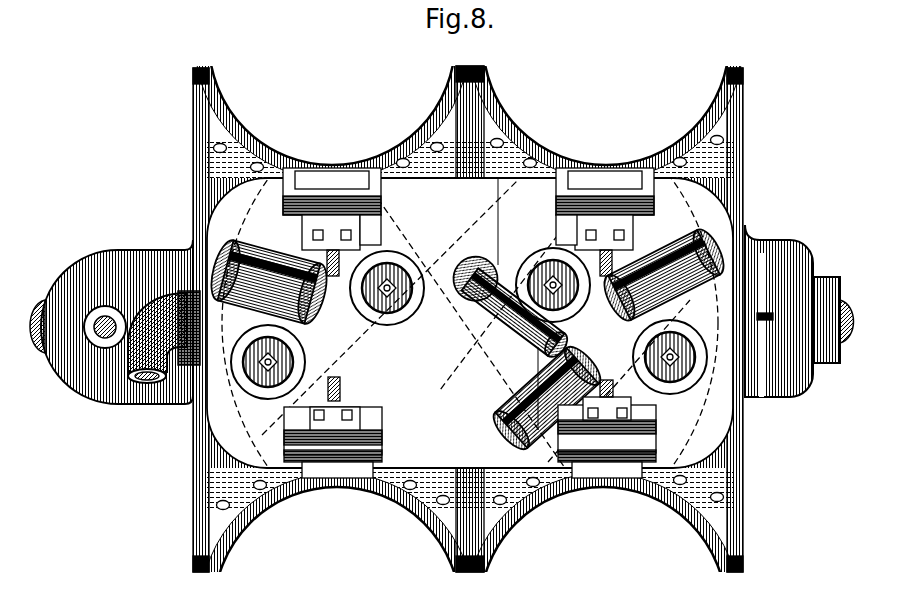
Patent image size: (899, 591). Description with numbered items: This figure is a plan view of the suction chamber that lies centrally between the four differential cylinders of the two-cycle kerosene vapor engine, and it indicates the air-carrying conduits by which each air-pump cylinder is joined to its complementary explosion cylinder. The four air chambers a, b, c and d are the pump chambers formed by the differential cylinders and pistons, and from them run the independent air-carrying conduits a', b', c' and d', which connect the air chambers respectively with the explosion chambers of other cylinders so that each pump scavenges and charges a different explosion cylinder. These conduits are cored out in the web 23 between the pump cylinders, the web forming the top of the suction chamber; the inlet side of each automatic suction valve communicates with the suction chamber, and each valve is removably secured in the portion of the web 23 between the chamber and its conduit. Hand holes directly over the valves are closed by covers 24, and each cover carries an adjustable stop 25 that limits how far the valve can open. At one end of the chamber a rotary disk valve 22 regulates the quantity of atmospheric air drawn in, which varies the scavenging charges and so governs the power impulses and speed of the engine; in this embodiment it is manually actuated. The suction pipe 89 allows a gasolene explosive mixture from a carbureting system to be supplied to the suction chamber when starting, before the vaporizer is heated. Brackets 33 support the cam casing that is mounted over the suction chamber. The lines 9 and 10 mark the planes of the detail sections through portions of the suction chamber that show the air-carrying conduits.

The section line 9- 9 is at (787, 427).
The section line 10- 10 is at (472, 578).
The rotary disk valve 22 is at (758, 332).
The web 23 is at (470, 323).
The cover 24 is at (407, 313).
The adjustable stop 25 is at (547, 262).
The bracket 33 is at (341, 384).
The suction pipe 89 is at (178, 333).
The air chamber a is at (603, 532).
The air chamber b is at (606, 89).
The air chamber c is at (337, 532).
The air chamber d is at (332, 89).
The air-carrying conduit a' is at (444, 289).
The air-carrying conduit b' is at (644, 380).
The air-carrying conduit c' is at (549, 242).
The air-carrying conduit d' is at (294, 386).